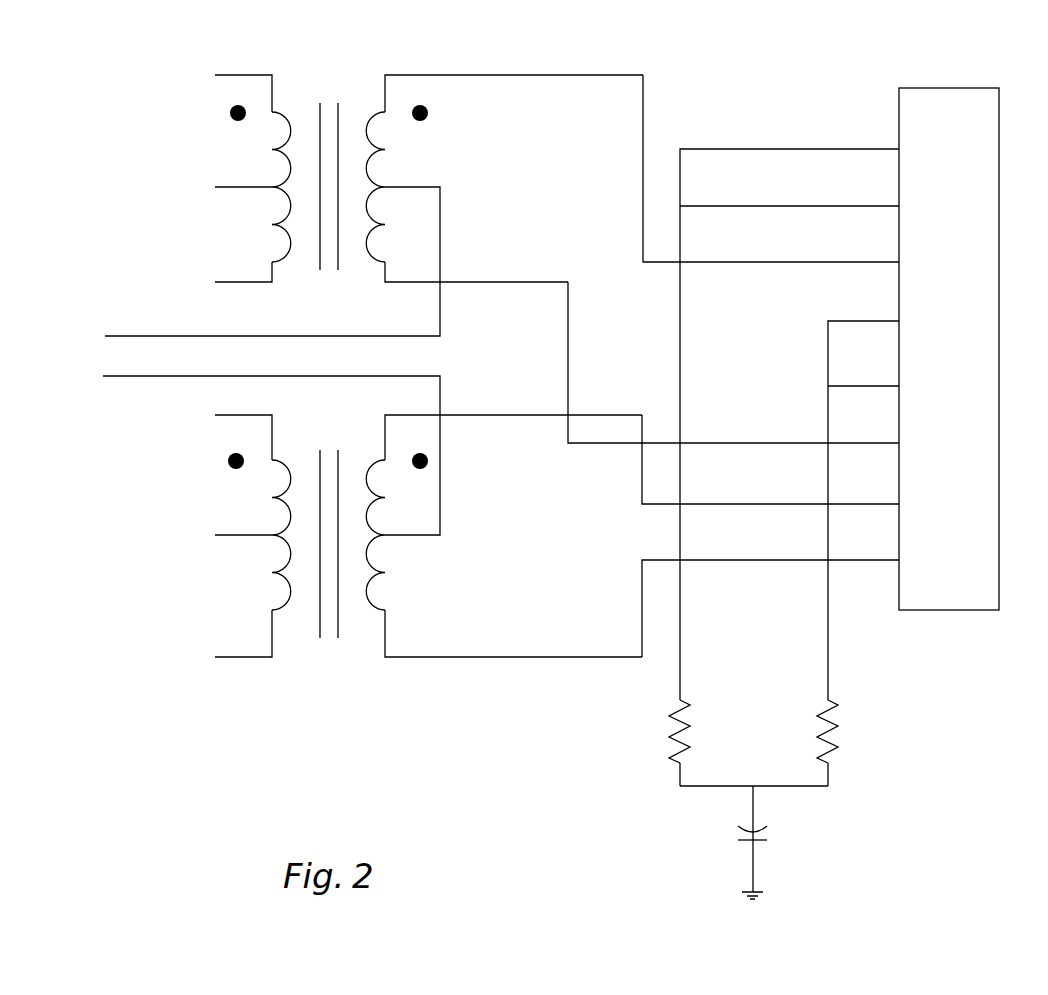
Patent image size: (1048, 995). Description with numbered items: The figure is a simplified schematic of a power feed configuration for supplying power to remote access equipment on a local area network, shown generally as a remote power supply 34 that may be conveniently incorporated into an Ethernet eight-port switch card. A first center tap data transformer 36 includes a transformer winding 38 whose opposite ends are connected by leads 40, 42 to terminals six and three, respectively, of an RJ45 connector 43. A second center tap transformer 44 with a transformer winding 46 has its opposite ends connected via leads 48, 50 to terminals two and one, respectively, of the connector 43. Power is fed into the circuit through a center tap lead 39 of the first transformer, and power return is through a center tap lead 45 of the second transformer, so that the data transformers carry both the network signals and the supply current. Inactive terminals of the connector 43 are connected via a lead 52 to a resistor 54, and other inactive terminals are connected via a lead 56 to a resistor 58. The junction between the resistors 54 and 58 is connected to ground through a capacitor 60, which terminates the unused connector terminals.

The remote power supply 34 is at (60, 425).
The first center tap data transformer 36 is at (502, 198).
The transformer winding 38 is at (382, 110).
The center tap lead 39 is at (123, 335).
The lead 40 is at (740, 262).
The lead 42 is at (728, 443).
The RJ45 connector 43 is at (936, 88).
The second center tap transformer 44 is at (486, 550).
The center tap lead 45 is at (123, 377).
The transformer winding 46 is at (382, 613).
The lead 48 is at (722, 504).
The lead 50 is at (722, 560).
The lead 52 is at (680, 637).
The resistor 54 is at (668, 735).
The lead 56 is at (829, 637).
The resistor 58 is at (840, 725).
The capacitor 60 is at (757, 847).